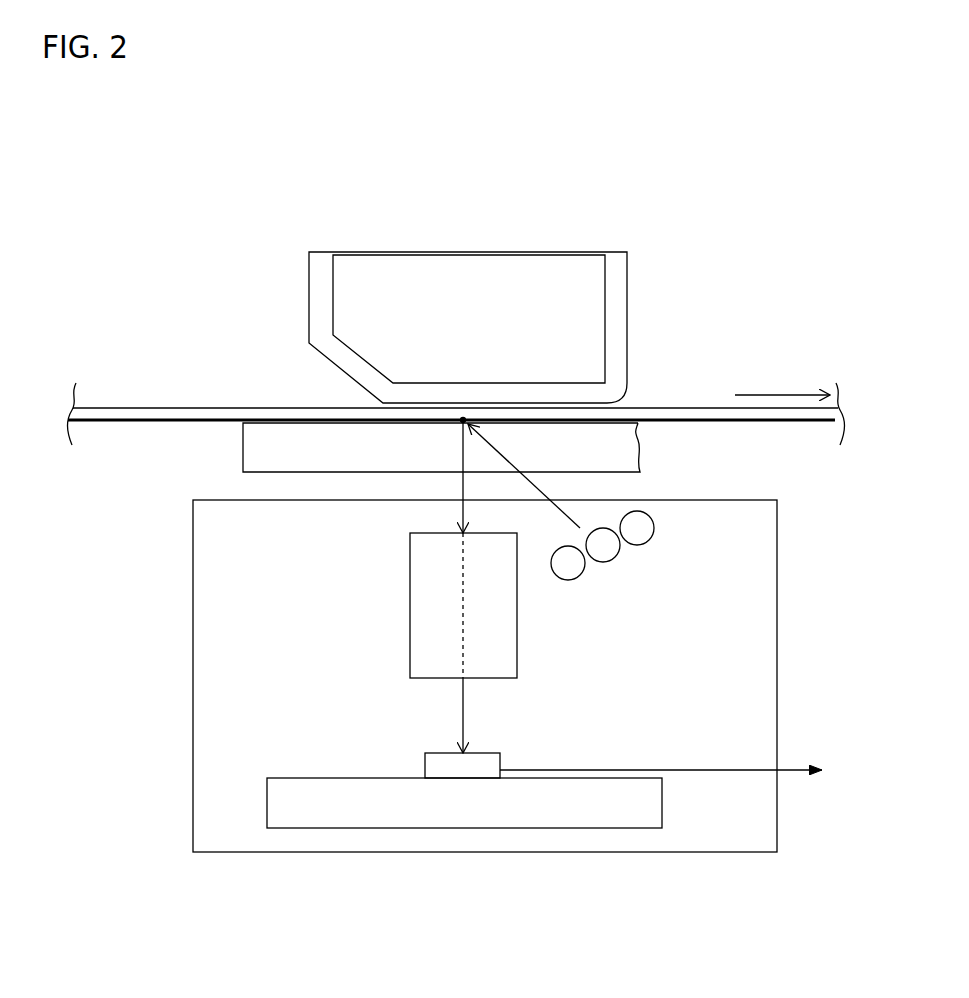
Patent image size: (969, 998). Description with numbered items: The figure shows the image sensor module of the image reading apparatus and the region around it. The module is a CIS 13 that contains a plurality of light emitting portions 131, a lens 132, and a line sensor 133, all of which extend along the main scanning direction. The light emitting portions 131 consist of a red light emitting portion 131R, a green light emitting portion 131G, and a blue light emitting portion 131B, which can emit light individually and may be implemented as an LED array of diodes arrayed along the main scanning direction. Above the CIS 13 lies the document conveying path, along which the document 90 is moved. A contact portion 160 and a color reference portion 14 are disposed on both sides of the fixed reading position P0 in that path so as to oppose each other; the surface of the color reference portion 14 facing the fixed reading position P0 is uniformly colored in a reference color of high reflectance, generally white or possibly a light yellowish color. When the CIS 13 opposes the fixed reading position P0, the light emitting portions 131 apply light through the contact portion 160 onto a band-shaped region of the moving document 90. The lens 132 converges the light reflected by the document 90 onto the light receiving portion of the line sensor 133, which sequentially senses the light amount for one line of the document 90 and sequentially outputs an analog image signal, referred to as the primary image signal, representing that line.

The color reference portion 14 is at (628, 280).
The document 90 is at (706, 408).
The contact portion 160 is at (243, 455).
The CIS 13 is at (780, 543).
The light emitting portions 131 is at (612, 550).
The red light emitting portion 131R is at (578, 580).
The green light emitting portion 131G is at (613, 560).
The blue light emitting portion 131B is at (682, 553).
The lens 132 is at (410, 655).
The line sensor 133 is at (425, 765).
The fixed reading position P0 is at (458, 425).